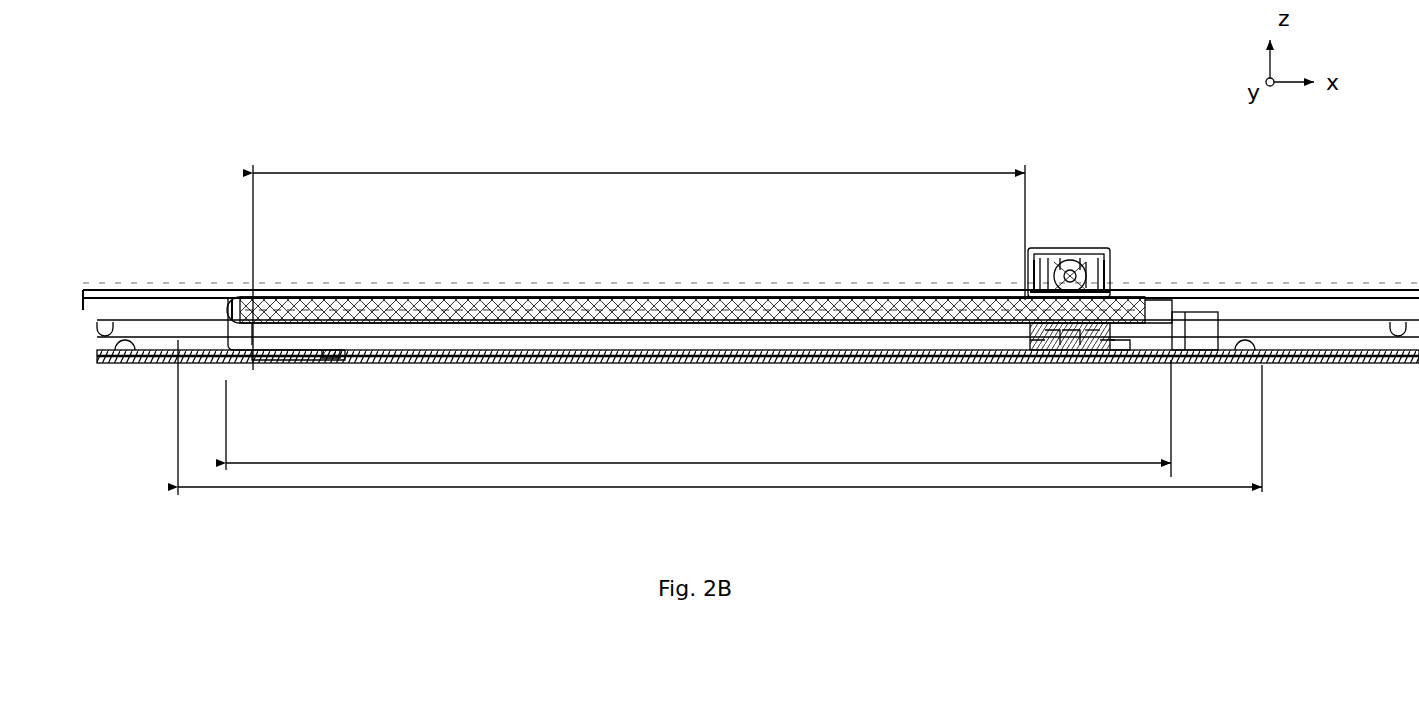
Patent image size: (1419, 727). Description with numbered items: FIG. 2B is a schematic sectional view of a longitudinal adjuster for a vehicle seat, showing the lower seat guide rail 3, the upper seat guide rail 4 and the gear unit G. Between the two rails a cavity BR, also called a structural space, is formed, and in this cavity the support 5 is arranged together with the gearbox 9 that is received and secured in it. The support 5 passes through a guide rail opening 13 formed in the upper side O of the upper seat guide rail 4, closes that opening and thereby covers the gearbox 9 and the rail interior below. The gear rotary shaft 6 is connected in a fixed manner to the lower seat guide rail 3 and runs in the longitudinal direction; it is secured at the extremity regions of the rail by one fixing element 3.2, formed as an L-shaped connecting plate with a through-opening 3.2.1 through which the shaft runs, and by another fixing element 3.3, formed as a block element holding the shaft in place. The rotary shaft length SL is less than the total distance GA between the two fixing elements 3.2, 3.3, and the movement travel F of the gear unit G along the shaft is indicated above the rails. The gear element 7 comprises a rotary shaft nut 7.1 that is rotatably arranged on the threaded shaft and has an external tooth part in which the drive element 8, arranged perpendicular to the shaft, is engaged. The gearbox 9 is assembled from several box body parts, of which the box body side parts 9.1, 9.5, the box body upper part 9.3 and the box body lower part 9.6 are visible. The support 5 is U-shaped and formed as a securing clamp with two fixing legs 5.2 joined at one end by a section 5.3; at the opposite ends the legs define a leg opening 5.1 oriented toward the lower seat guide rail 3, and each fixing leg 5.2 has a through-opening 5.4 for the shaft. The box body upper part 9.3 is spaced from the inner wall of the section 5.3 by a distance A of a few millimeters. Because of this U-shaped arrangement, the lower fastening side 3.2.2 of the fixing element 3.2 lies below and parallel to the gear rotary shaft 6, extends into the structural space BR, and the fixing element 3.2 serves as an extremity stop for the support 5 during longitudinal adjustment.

The lower seat guide rail 3 is at (1370, 350).
The fixing element 3.2 is at (252, 362).
The through-opening 3.2.1 is at (233, 308).
The lower fastening side 3.2.2 is at (325, 358).
The fixing element 3.3 is at (1160, 345).
The upper seat guide rail 4 is at (1340, 290).
The support 5 is at (1028, 258).
The leg opening 5.1 is at (1085, 343).
The fixing legs 5.2 is at (1027, 280).
The section 5.3 is at (1100, 252).
The through-opening 5.4 is at (1035, 323).
The gear rotary shaft 6 is at (330, 297).
The gear element 7 is at (1070, 252).
The rotary shaft nut 7.1 is at (1048, 330).
The drive element 8 is at (1082, 252).
The gearbox 9 is at (1108, 252).
The box body side part 9.1 is at (1044, 252).
The box body upper part 9.3 is at (1052, 252).
The box body side part 9.5 is at (1112, 285).
The box body lower part 9.6 is at (1070, 348).
The guide rail opening 13 is at (1030, 295).
The movement travel F is at (639, 256).
The rotary shaft length SL is at (698, 418).
The total distance GA is at (720, 429).
The cavity BR is at (440, 340).
The upper side O is at (655, 290).
The distance A is at (1028, 272).
The gear unit G is at (1165, 210).